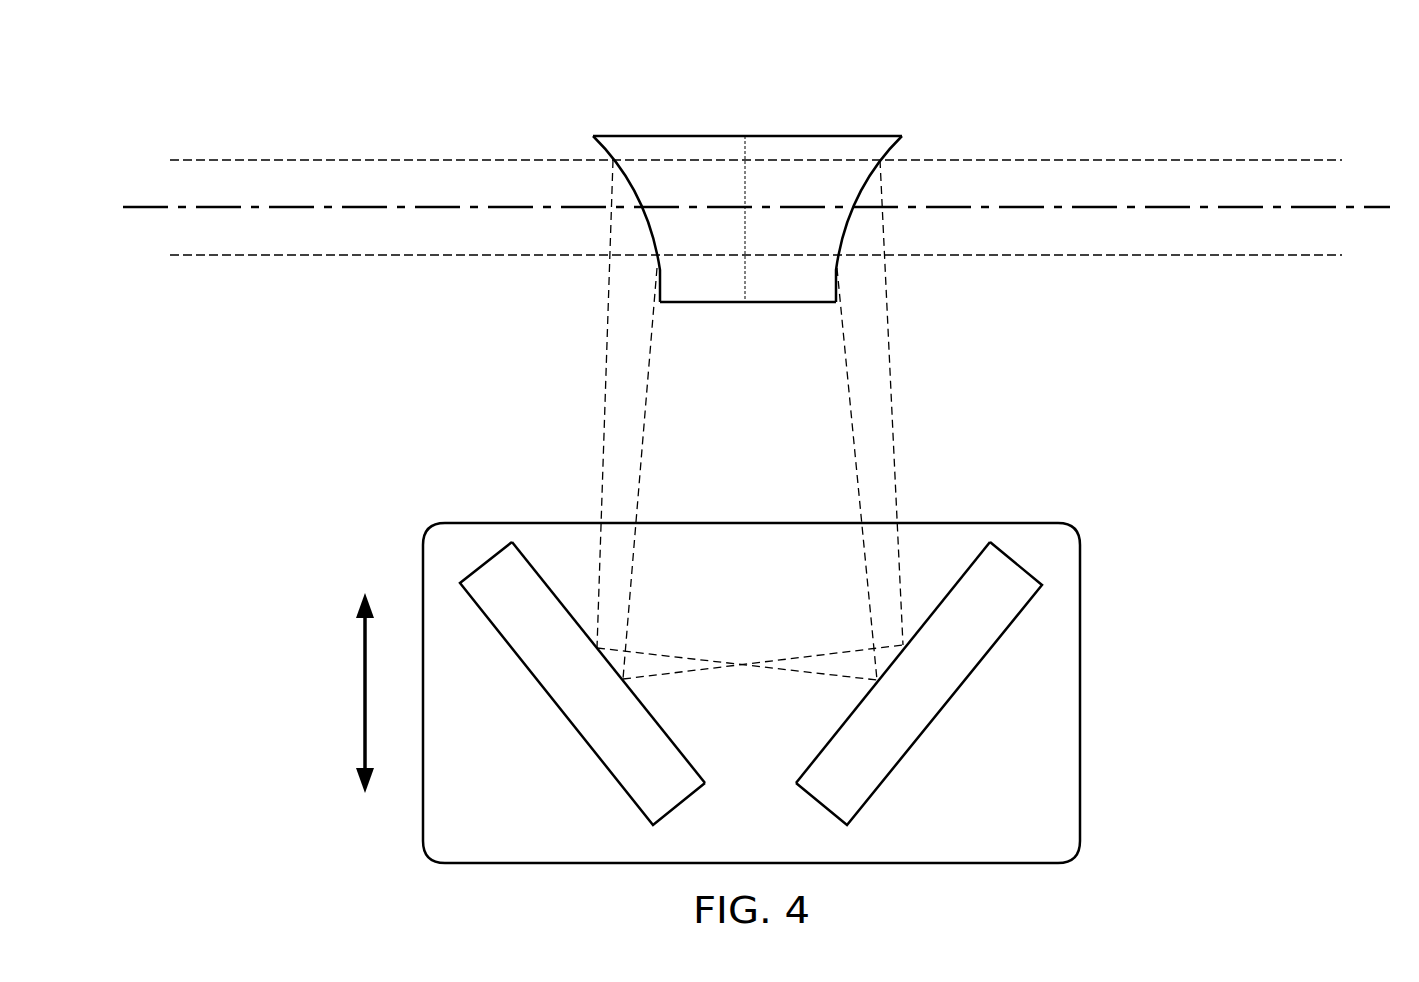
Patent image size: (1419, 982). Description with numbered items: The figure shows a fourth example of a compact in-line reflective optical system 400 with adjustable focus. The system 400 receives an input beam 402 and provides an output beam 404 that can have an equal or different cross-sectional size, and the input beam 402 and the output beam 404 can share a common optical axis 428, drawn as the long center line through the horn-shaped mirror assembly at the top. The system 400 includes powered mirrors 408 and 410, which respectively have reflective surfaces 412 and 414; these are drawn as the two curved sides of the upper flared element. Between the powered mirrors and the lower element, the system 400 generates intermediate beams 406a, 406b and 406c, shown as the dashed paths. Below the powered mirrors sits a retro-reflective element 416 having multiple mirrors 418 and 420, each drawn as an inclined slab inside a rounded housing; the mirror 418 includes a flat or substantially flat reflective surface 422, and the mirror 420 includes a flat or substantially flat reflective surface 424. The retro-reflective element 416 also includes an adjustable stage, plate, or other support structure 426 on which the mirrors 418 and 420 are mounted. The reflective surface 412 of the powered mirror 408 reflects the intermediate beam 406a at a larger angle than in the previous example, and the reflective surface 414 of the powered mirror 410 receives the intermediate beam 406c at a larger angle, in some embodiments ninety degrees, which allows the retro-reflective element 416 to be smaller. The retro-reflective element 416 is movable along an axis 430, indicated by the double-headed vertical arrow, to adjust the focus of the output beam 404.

The compact in-line reflective optical system 400 is at (318, 91).
The input beam 402 is at (387, 159).
The output beam 404 is at (1118, 159).
The intermediate beam 406a is at (647, 400).
The intermediate beam 406b is at (752, 660).
The intermediate beam 406c is at (845, 357).
The powered mirror 408 is at (665, 145).
The powered mirror 410 is at (828, 145).
The reflective surface 412 is at (598, 150).
The reflective surface 414 is at (898, 150).
The retro-reflective element 416 is at (902, 887).
The mirror 418 is at (557, 705).
The mirror 420 is at (945, 705).
The reflective surface 422 is at (663, 727).
The reflective surface 424 is at (838, 728).
The support structure 426 is at (1007, 866).
The common optical axis 428 is at (148, 206).
The axis 430 is at (364, 690).